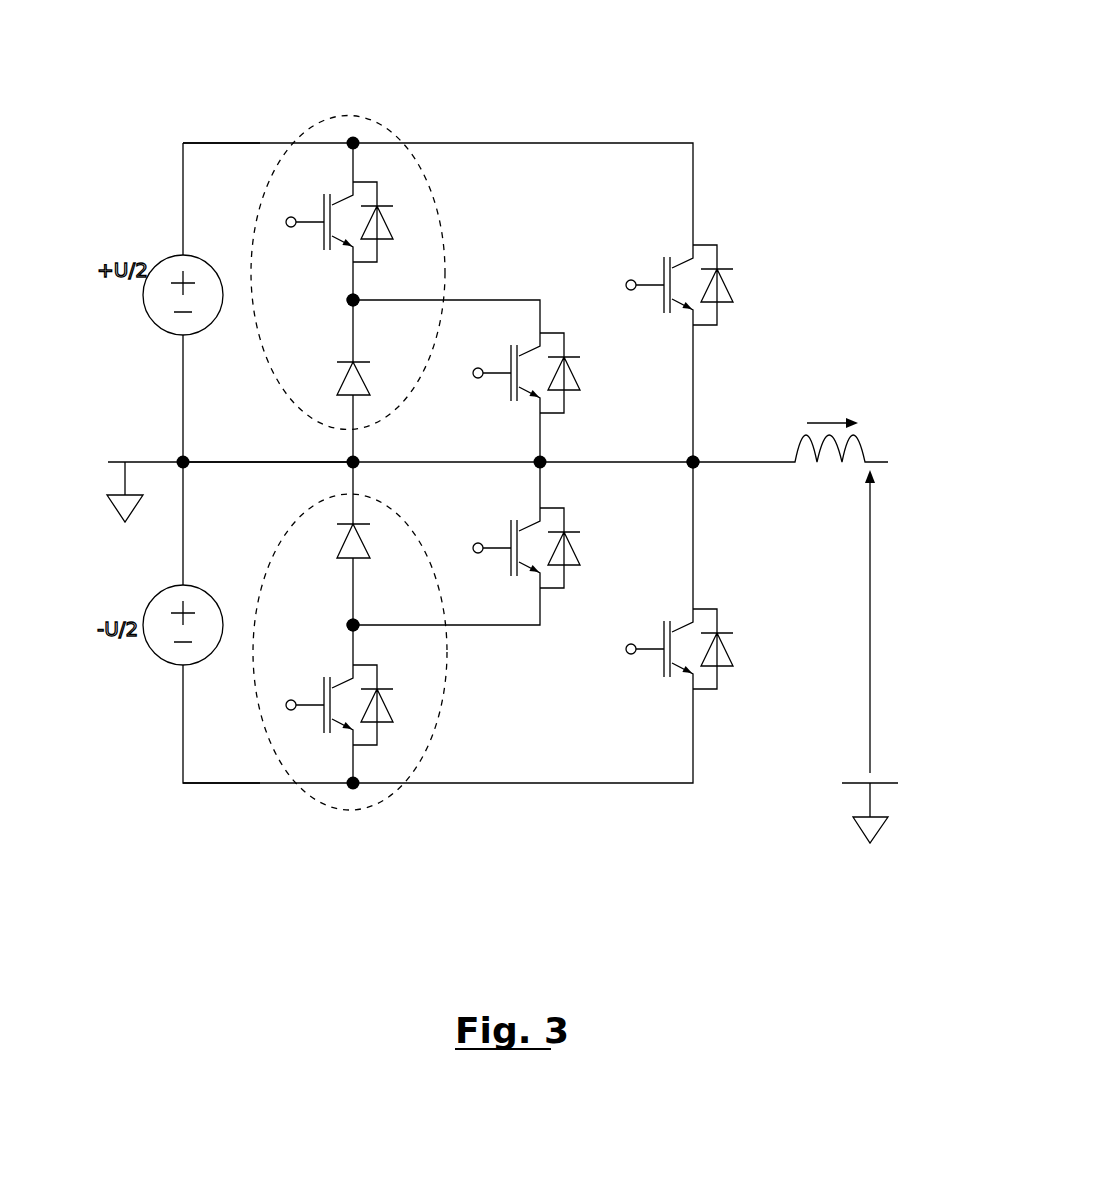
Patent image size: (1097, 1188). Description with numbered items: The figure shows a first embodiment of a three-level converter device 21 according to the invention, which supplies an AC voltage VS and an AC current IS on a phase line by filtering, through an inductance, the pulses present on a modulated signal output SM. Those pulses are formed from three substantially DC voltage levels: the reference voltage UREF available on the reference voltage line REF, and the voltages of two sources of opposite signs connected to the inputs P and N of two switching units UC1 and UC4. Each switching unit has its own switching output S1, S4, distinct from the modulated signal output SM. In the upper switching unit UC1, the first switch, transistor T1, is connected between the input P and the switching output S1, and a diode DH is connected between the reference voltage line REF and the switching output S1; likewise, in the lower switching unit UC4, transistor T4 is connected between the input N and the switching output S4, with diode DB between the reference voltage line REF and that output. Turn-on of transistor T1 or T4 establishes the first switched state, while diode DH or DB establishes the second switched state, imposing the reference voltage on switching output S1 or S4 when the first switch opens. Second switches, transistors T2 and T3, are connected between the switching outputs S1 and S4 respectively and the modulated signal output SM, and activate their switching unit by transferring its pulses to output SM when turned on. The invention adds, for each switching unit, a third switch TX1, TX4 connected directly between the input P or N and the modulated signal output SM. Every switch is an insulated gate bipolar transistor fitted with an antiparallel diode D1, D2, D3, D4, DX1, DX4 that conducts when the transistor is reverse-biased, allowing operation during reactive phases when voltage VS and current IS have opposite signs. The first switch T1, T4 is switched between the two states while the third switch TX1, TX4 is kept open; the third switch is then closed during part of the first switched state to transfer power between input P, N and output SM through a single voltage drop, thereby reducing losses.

The converter device 21 is at (737, 94).
The switching unit UC1 is at (380, 127).
The switching unit UC4 is at (415, 773).
The switching output S1 is at (353, 300).
The switching output S4 is at (352, 627).
The modulated signal output SM is at (693, 462).
The first switch (transistor) T1 is at (319, 222).
The diode D1 is at (389, 222).
The diode DH is at (369, 378).
The diode DB is at (369, 541).
The first switch (transistor) T4 is at (319, 705).
The diode D4 is at (389, 705).
The second switch (transistor) T2 is at (506, 373).
The diode D2 is at (575, 373).
The second switch (transistor) T3 is at (506, 548).
The diode D3 is at (575, 548).
The third switch (transistor) TX1 is at (654, 285).
The diode DX1 is at (735, 285).
The third switch (transistor) TX4 is at (654, 649).
The diode DX4 is at (735, 649).
The AC current IS is at (790, 429).
The AC voltage VS is at (883, 621).
The input P is at (221, 129).
The input N is at (221, 768).
The reference voltage level UREF is at (268, 447).
The reference voltage line REF is at (501, 665).